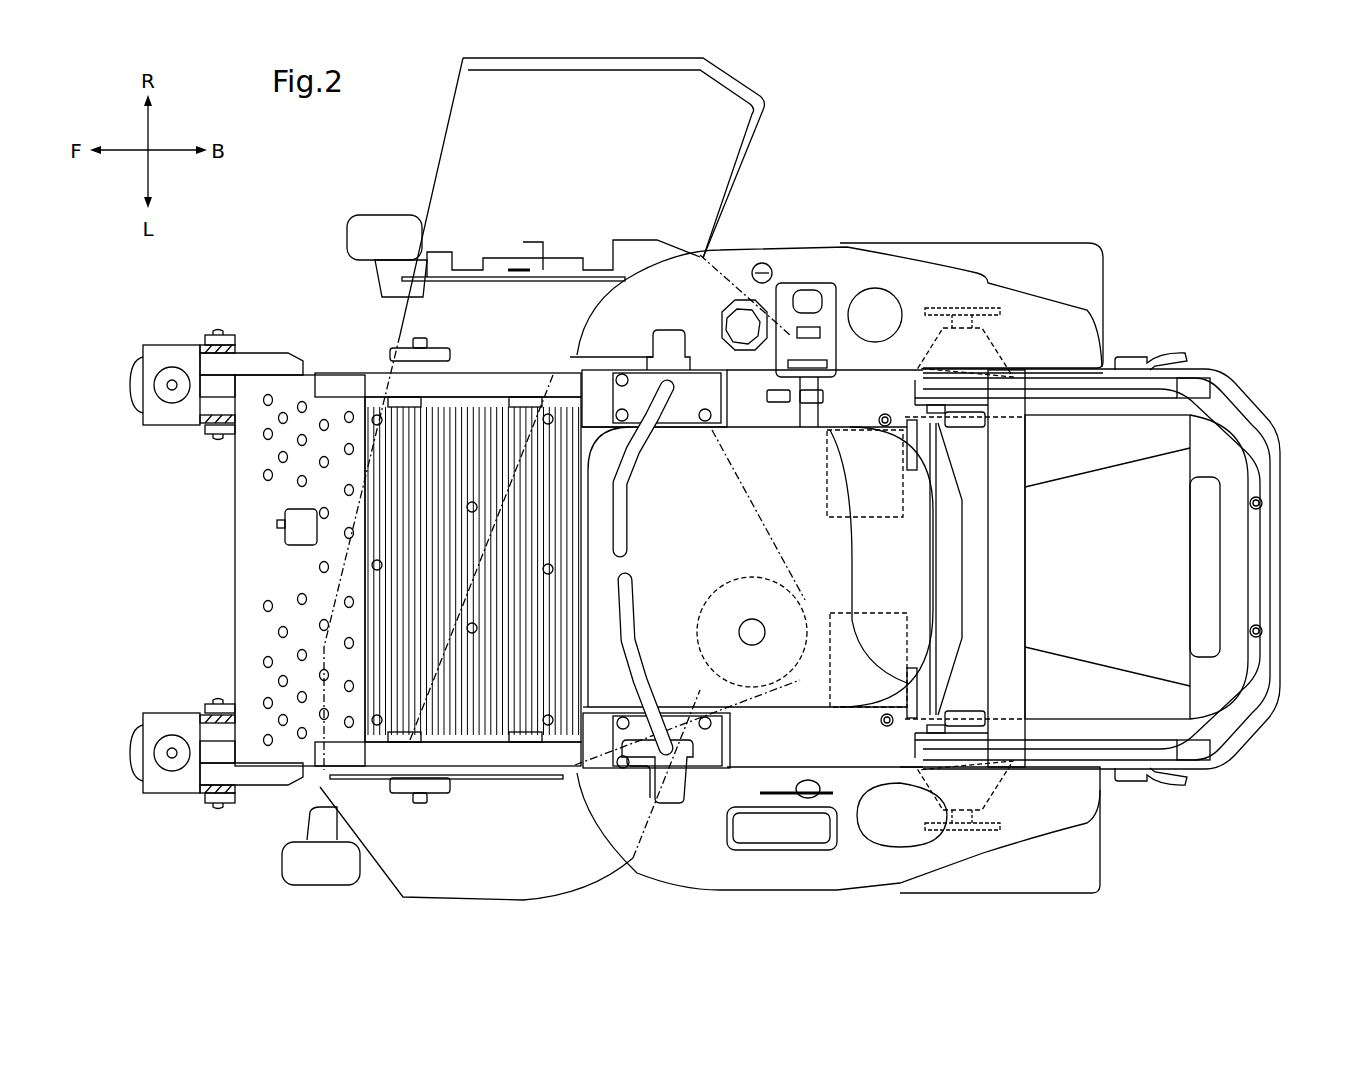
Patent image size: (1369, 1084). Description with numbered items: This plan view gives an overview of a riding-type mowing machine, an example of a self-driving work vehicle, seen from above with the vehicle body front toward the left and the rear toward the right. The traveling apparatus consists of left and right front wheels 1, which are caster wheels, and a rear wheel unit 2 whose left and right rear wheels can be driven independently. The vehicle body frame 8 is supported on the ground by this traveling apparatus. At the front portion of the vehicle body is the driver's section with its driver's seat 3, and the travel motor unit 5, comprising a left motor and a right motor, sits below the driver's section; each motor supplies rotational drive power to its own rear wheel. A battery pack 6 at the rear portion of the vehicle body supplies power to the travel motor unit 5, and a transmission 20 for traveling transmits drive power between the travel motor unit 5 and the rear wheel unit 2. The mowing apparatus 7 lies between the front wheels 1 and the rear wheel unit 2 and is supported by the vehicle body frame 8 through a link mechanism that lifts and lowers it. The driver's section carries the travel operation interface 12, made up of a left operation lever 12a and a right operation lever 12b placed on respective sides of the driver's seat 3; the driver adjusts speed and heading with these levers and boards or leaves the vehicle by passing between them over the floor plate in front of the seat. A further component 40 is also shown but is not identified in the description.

The front wheels 1 is at (258, 362).
The rear wheel unit 2 is at (1038, 275).
The driver's seat 3 is at (665, 480).
The travel motor unit 5 is at (833, 490).
The battery pack 6 is at (1200, 566).
The mowing apparatus 7 is at (420, 860).
The vehicle body frame 8 is at (355, 380).
The travel operation interface 12 is at (682, 567).
The left operation lever 12a is at (630, 605).
The right operation lever 12b is at (630, 522).
The transmission 20 is at (863, 393).
The mount bracket 40 is at (703, 385).